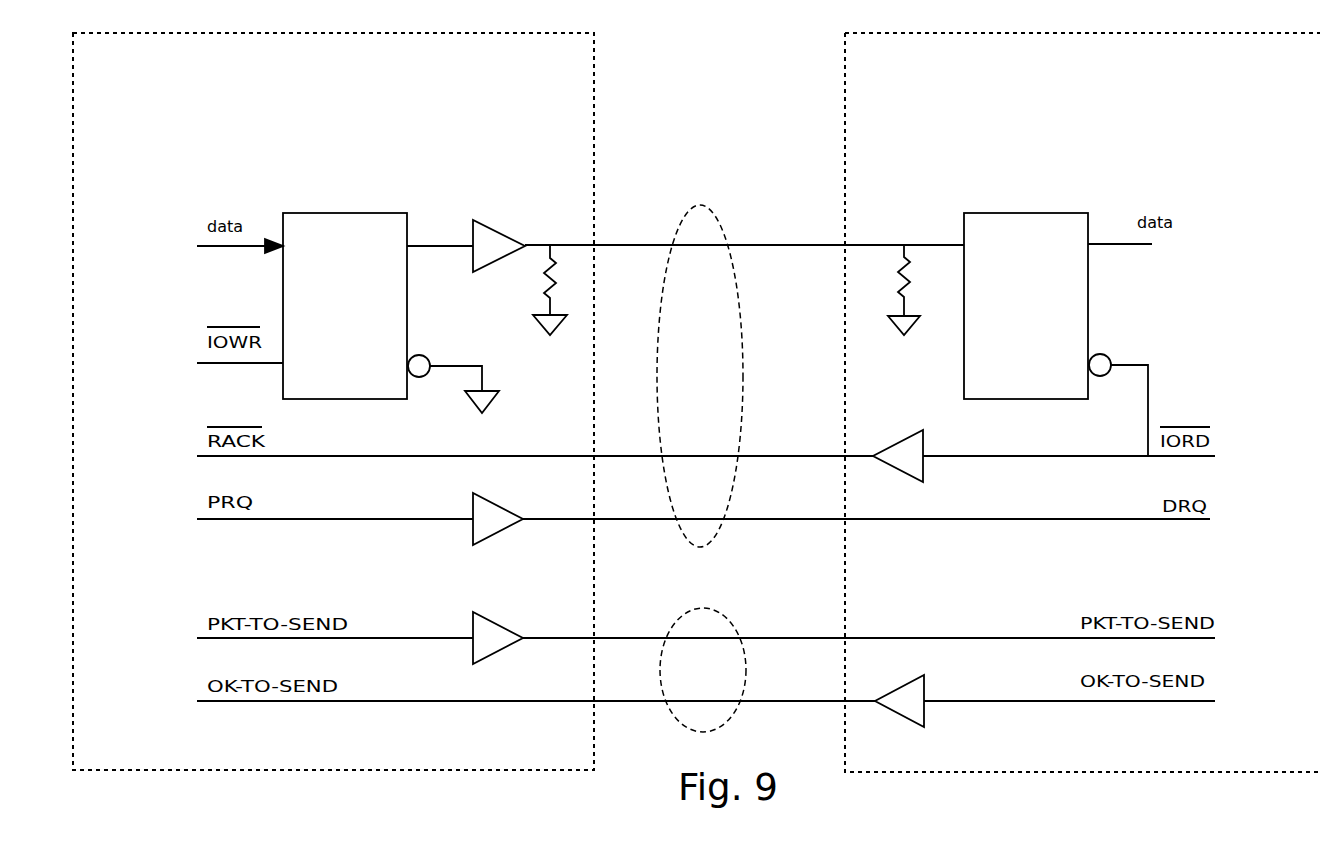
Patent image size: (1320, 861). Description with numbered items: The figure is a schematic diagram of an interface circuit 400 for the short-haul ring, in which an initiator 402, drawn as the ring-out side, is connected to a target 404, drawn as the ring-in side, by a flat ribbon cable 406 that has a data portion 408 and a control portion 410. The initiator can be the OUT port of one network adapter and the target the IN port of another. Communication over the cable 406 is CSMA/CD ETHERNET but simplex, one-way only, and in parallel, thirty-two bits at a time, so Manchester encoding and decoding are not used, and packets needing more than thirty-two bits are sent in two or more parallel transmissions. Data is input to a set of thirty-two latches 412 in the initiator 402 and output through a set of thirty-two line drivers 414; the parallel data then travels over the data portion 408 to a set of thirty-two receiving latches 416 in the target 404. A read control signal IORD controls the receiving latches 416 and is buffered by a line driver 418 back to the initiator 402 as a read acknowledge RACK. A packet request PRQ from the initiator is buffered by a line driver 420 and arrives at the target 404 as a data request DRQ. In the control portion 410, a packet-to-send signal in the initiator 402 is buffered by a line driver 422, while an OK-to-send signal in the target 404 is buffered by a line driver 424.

The interface circuit 400 is at (696, 402).
The initiator 402 is at (505, 121).
The target 404 is at (1277, 121).
The flat ribbon cable 406 is at (706, 183).
The data portion 408 is at (742, 340).
The control portion 410 is at (730, 622).
The latches 412 is at (327, 213).
The line drivers 414 is at (477, 222).
The receiving latches 416 is at (1023, 213).
The line driver 418 is at (923, 431).
The line driver 420 is at (492, 543).
The line driver 422 is at (500, 623).
The line driver 424 is at (926, 674).